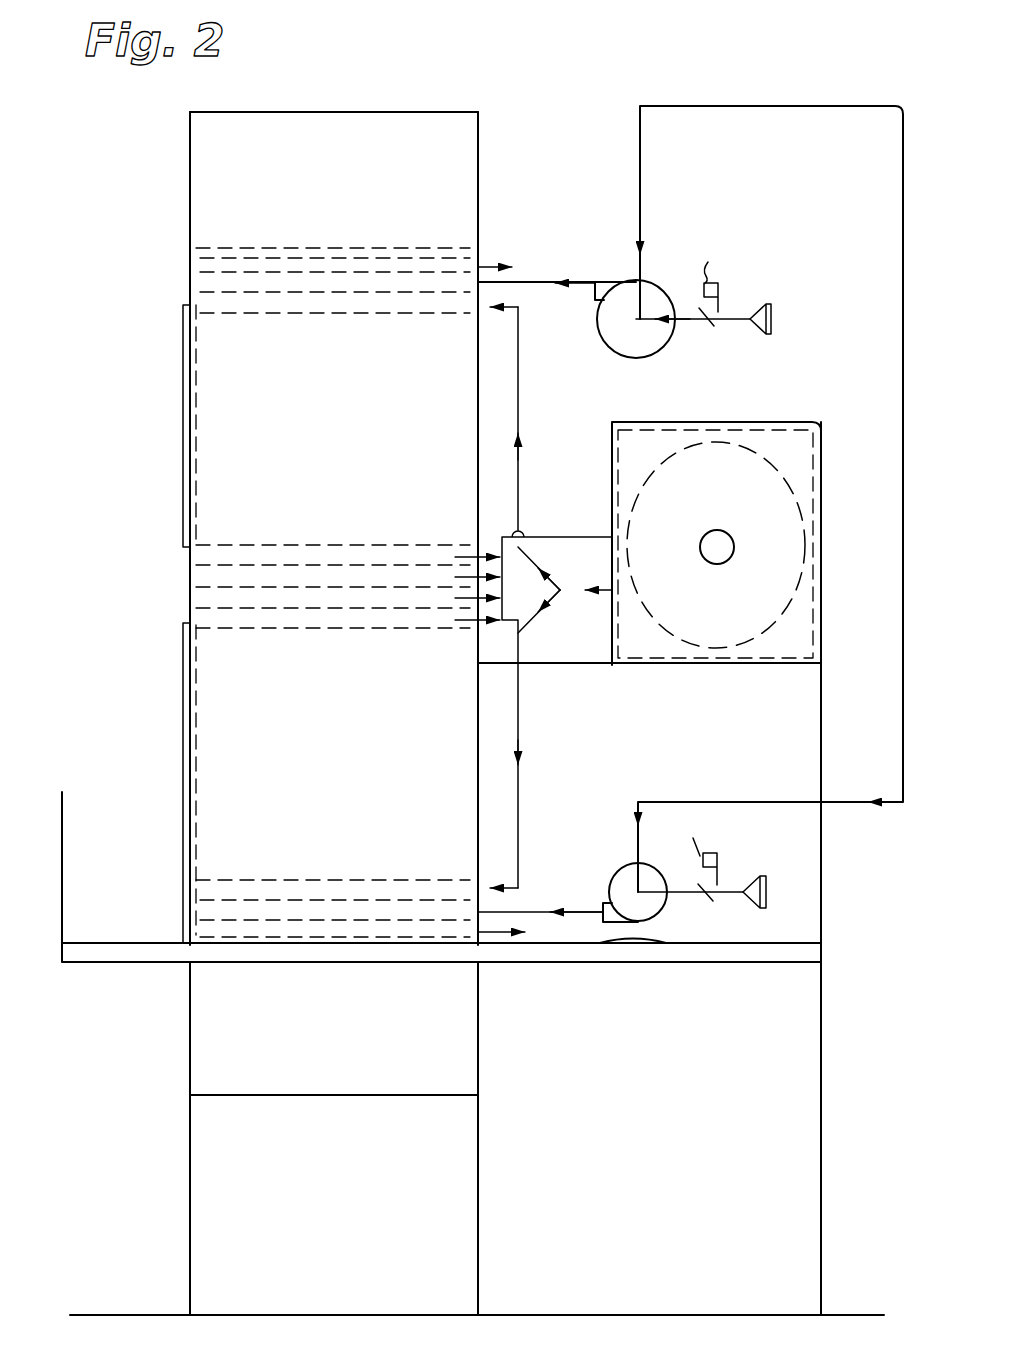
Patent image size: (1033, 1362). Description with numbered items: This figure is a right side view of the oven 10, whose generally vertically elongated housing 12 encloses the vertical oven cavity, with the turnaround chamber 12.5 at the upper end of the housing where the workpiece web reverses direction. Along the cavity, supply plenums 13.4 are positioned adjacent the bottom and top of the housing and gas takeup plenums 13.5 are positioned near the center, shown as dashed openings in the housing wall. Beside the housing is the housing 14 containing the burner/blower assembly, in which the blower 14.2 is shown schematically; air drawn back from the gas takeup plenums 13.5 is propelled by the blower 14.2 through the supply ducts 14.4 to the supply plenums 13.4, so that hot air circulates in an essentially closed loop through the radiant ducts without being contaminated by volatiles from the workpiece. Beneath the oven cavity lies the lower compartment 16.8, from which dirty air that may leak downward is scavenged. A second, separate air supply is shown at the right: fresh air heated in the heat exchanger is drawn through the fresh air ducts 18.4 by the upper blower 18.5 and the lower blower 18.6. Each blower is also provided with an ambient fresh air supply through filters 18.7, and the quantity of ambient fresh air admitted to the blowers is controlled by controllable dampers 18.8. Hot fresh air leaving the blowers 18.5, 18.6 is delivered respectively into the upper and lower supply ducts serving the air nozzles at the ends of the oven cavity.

The oven 10 is at (173, 973).
The housing 12 is at (212, 731).
The turnaround chamber 12.5 is at (200, 188).
The supply plenums 13.4 is at (190, 297).
The gas takeup plenums 13.5 is at (196, 558).
The housing 14 is at (672, 667).
The blower 14.2 is at (704, 613).
The supply ducts 14.4 is at (518, 378).
The main exhaust duct 16.8 is at (378, 1043).
The fresh air ducts 18.4 is at (735, 104).
The upper blower 18.5 is at (666, 352).
The lower blower 18.6 is at (658, 912).
The filters 18.7 is at (766, 300).
The controllable dampers 18.8 is at (706, 563).